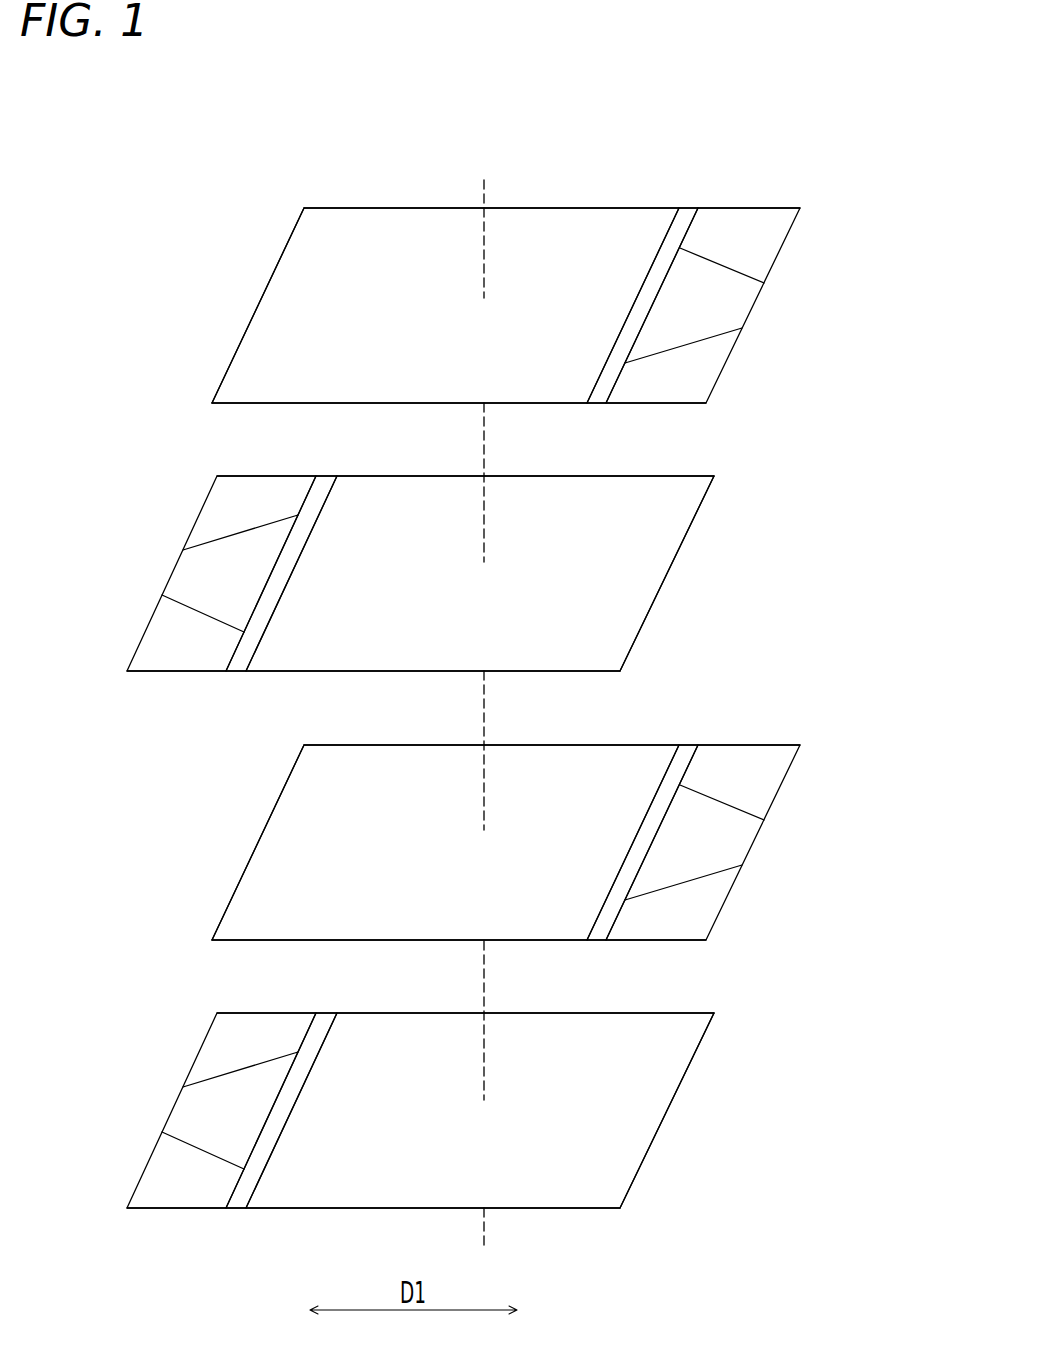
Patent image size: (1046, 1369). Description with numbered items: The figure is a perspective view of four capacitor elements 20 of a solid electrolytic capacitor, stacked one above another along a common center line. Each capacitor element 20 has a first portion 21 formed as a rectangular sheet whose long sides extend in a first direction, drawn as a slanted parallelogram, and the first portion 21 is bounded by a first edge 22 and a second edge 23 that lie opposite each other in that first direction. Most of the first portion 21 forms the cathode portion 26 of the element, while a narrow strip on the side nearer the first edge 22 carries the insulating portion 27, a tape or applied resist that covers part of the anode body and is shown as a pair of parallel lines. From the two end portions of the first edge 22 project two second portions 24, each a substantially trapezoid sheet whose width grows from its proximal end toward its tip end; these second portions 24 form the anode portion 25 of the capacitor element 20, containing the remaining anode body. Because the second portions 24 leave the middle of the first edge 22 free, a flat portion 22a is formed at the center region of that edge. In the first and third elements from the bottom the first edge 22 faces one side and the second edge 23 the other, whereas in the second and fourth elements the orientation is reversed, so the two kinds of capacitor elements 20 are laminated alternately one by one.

The capacitor element 20 is at (276, 268).
The first portion 21 is at (285, 326).
The first edge 22 is at (673, 268).
The flat portion 22a is at (660, 297).
The second edge 23 is at (234, 353).
The second portion 24 is at (752, 242).
The anode portion 25 is at (468, 702).
The cathode portion 26 is at (335, 238).
The insulating portion 27 is at (638, 293).